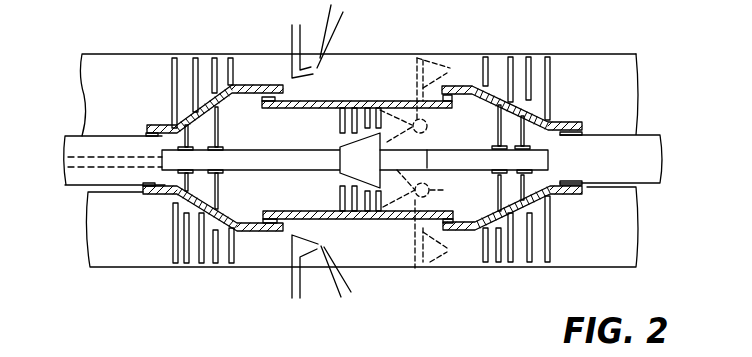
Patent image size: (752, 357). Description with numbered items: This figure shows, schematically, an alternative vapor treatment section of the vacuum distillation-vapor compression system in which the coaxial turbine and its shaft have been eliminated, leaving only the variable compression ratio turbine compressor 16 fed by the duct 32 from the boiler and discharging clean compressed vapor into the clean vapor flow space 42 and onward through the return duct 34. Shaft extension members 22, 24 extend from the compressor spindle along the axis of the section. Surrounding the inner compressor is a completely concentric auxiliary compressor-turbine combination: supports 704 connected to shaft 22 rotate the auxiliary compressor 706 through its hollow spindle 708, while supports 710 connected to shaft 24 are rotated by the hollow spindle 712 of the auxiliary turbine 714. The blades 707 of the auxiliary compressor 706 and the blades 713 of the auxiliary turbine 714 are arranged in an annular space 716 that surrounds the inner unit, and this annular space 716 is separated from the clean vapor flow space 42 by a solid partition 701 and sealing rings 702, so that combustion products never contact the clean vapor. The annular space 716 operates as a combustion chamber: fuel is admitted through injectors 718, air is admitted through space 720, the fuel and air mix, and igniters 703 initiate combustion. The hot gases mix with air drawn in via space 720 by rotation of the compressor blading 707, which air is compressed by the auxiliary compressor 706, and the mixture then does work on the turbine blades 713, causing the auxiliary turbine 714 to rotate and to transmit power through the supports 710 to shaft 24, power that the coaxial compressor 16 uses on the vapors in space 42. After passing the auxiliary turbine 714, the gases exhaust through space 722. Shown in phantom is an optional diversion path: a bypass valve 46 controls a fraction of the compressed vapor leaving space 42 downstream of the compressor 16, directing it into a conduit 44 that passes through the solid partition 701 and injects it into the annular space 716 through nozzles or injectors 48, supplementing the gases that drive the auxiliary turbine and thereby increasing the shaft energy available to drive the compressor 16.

The variable compression ratio turbine compressor 16 is at (385, 93).
The shaft extension member 22 is at (314, 165).
The shaft extension member 24 is at (427, 168).
The duct 32 is at (78, 134).
The return duct 34 is at (657, 170).
The clean vapor flow space 42 is at (417, 146).
The conduit 44 is at (423, 60).
The bypass valve 46 is at (428, 127).
The nozzles or injectors 48 is at (416, 68).
The solid partition 701 is at (307, 110).
The sealing rings 702 is at (147, 128).
The igniters 703 is at (334, 20).
The supports 704 is at (174, 202).
The auxiliary compressor 706 is at (200, 60).
The blades of auxiliary compressor 707 is at (172, 60).
The hollow spindle 708 is at (196, 214).
The supports 710 is at (523, 129).
The hollow spindle 712 is at (532, 108).
The blades of auxiliary turbine 713 is at (528, 263).
The auxiliary turbine 714 is at (537, 265).
The annular space 716 is at (362, 85).
The injectors 718 is at (292, 74).
The space 720 is at (132, 87).
The space 722 is at (620, 252).